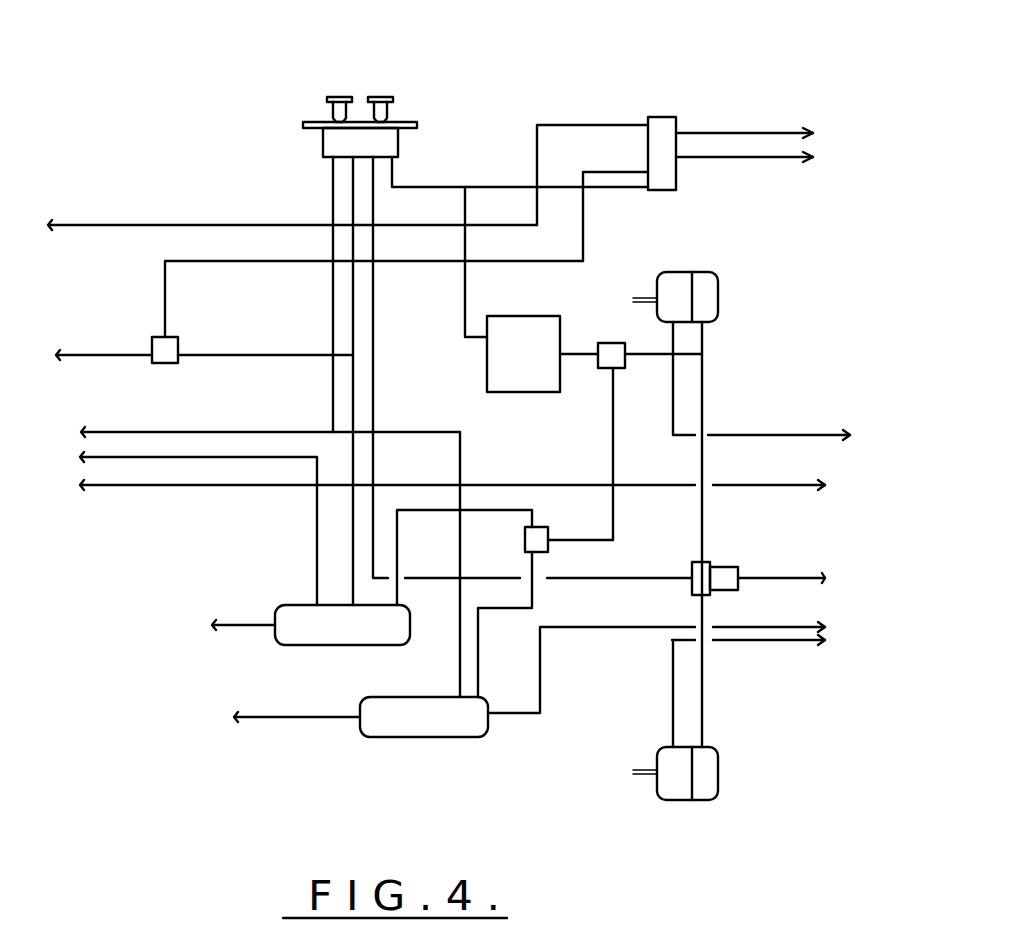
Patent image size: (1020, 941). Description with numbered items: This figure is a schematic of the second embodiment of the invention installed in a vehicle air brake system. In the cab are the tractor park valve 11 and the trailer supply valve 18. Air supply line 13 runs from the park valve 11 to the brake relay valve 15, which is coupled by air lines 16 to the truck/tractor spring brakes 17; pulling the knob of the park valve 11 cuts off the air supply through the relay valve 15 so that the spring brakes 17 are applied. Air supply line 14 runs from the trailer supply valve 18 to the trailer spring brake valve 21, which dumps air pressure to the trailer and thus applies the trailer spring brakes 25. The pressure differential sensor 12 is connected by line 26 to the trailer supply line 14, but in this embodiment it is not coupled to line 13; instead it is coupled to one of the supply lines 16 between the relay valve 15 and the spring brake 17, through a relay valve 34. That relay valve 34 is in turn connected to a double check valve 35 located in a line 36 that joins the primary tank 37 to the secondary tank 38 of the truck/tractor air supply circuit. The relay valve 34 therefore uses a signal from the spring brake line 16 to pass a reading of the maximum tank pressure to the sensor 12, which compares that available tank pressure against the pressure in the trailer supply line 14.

The in-cab brake valve 11 is at (337, 97).
The in-cab control valve 18 is at (378, 97).
The air supply line 13 is at (372, 193).
The air supply line 14 is at (490, 187).
The trailer spring brake valve 21 is at (655, 125).
The trailer spring brakes 25 is at (781, 146).
The line 26 is at (465, 285).
The pressure differential sensor 12 is at (520, 378).
The relay valve 34 is at (607, 343).
The spring brakes 17 is at (698, 283).
The air lines 16 is at (705, 377).
The brake relay valve 15 is at (717, 572).
The line 36 is at (395, 538).
The double check valve 35 is at (538, 547).
The secondary tank 38 is at (315, 618).
The primary tank 37 is at (382, 707).